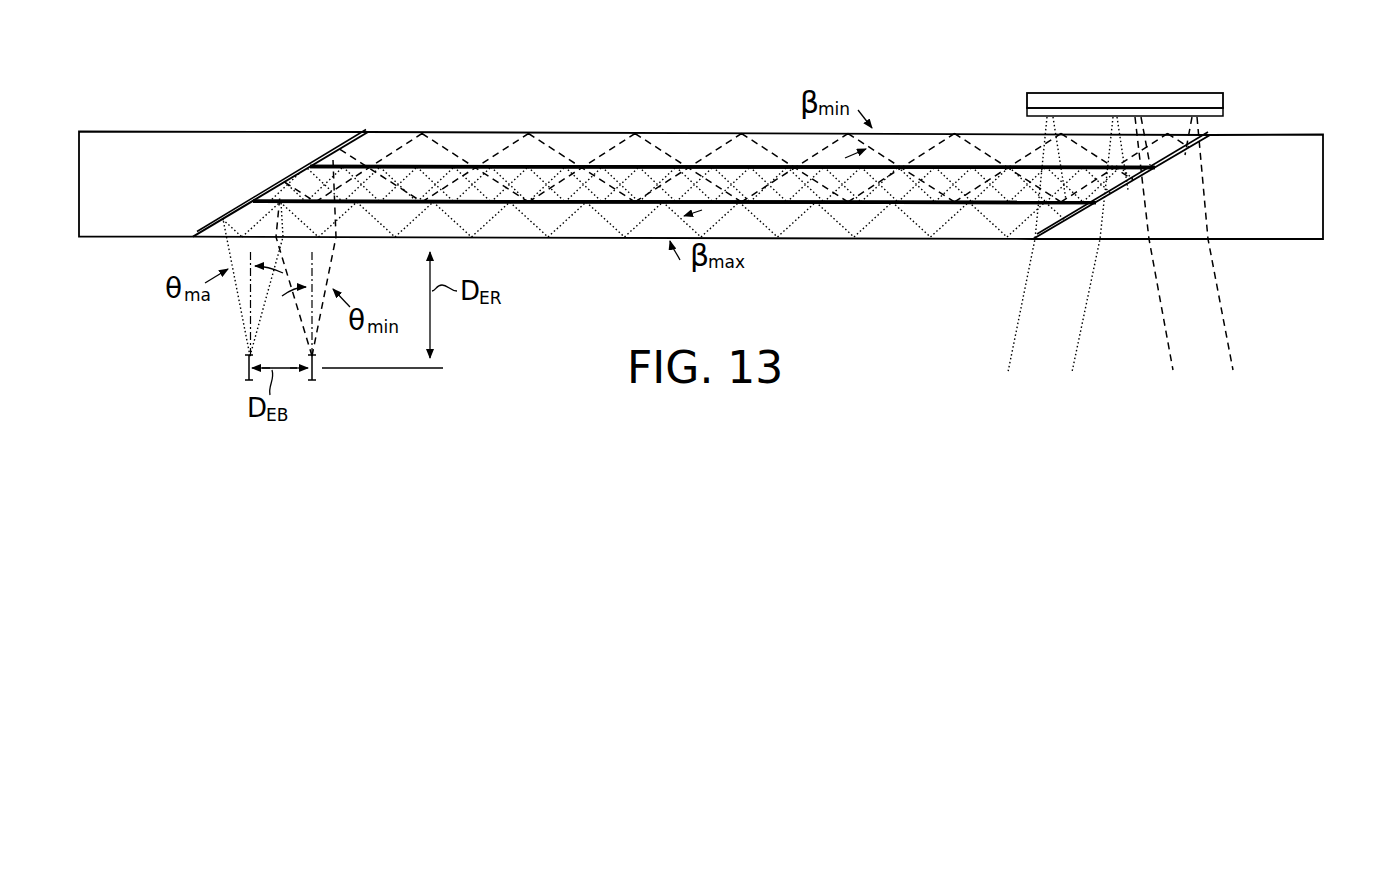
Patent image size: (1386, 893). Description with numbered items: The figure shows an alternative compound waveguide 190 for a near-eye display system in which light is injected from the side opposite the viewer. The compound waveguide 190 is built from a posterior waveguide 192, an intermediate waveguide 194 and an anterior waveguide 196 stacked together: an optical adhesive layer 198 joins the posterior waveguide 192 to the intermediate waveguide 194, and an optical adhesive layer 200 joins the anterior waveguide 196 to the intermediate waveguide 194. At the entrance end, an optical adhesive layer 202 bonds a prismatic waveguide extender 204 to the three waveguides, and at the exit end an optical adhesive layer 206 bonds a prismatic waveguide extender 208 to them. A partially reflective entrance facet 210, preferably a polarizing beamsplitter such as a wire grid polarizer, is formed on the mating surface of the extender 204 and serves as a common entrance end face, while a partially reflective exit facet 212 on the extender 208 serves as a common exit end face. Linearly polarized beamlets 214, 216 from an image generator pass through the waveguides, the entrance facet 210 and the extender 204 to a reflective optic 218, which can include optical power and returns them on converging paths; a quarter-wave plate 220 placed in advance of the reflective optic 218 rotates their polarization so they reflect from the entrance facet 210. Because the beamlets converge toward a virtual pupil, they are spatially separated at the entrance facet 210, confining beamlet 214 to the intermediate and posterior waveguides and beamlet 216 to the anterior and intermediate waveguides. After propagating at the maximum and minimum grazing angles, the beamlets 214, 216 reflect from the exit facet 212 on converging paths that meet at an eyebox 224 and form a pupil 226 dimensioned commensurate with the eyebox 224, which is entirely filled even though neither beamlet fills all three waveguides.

The compound waveguide 190 is at (553, 124).
The posterior waveguide 192 is at (678, 148).
The intermediate waveguide 194 is at (746, 180).
The anterior waveguide 196 is at (818, 212).
The optical adhesive layer 198 is at (910, 165).
The optical adhesive layer 200 is at (553, 205).
The optical adhesive layer 202 is at (1172, 160).
The prismatic waveguide extender 204 is at (1305, 156).
The optical adhesive layer 206 is at (287, 178).
The prismatic waveguide extender 208 is at (133, 163).
The partially reflective entrance facet 210 is at (1036, 213).
The partially reflective exit facet 212 is at (357, 141).
The beamlet 214 is at (592, 187).
The beamlet 216 is at (455, 177).
The reflective optic 218 is at (1203, 114).
The quarter-wave plate 220 is at (1024, 110).
The eyebox 224 is at (322, 389).
The pupil 226 is at (295, 378).